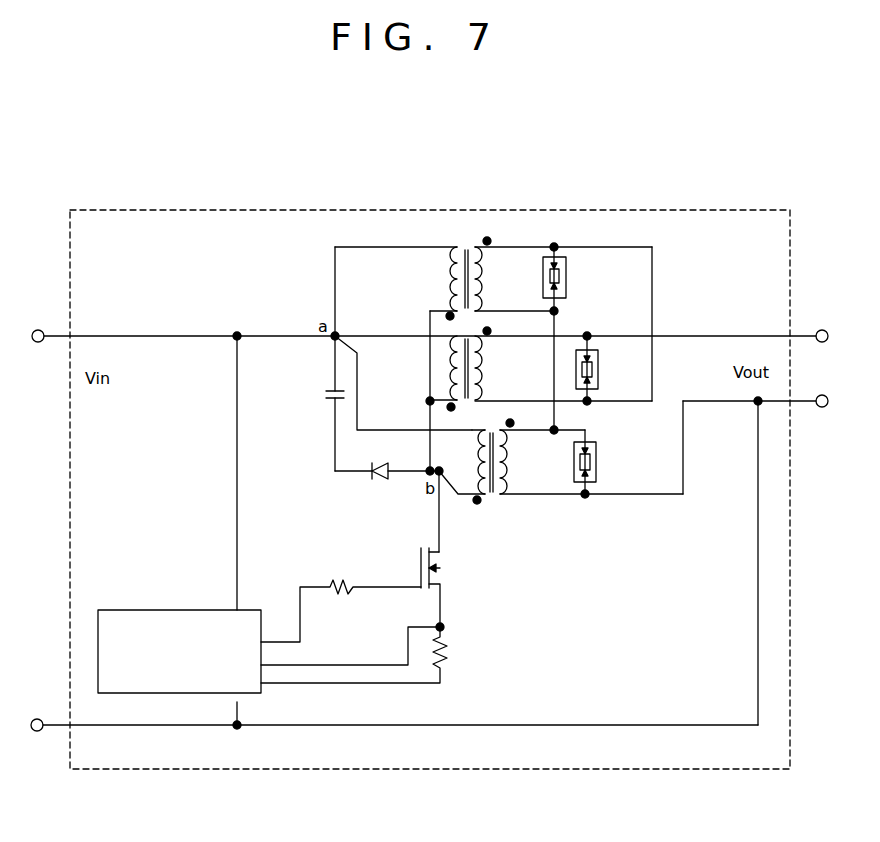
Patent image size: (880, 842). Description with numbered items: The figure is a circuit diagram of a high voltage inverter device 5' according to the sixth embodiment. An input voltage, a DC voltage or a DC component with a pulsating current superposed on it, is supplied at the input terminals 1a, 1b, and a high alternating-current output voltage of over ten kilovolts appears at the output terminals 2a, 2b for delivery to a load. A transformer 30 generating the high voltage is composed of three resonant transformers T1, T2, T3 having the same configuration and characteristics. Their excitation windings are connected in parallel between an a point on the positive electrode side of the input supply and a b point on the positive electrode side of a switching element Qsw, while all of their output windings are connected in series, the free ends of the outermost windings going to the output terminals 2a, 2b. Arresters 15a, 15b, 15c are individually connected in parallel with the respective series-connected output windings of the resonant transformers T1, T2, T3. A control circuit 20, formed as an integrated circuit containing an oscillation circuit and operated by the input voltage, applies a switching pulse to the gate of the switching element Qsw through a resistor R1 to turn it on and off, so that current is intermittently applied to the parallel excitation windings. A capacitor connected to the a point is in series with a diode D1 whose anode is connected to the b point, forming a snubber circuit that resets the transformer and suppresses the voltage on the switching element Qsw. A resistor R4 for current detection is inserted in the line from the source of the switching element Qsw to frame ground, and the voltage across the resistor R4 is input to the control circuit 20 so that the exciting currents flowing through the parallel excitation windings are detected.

The high voltage inverter device 5' is at (430, 464).
The input terminal 1a is at (38, 330).
The input terminal 1b is at (36, 731).
The output terminal 2a is at (822, 330).
The output terminal 2b is at (822, 408).
The arrester 15a is at (598, 371).
The arrester 15b is at (566, 281).
The arrester 15c is at (596, 463).
The control circuit 20 is at (170, 610).
The transformer 30 is at (516, 522).
The resonant transformer T1 is at (521, 364).
The resonant transformer T2 is at (493, 273).
The resonant transformer T3 is at (557, 458).
The diode D1 is at (387, 479).
The resistor R1 is at (341, 601).
The resistor R4 is at (368, 653).
The switching element Qsw is at (453, 549).